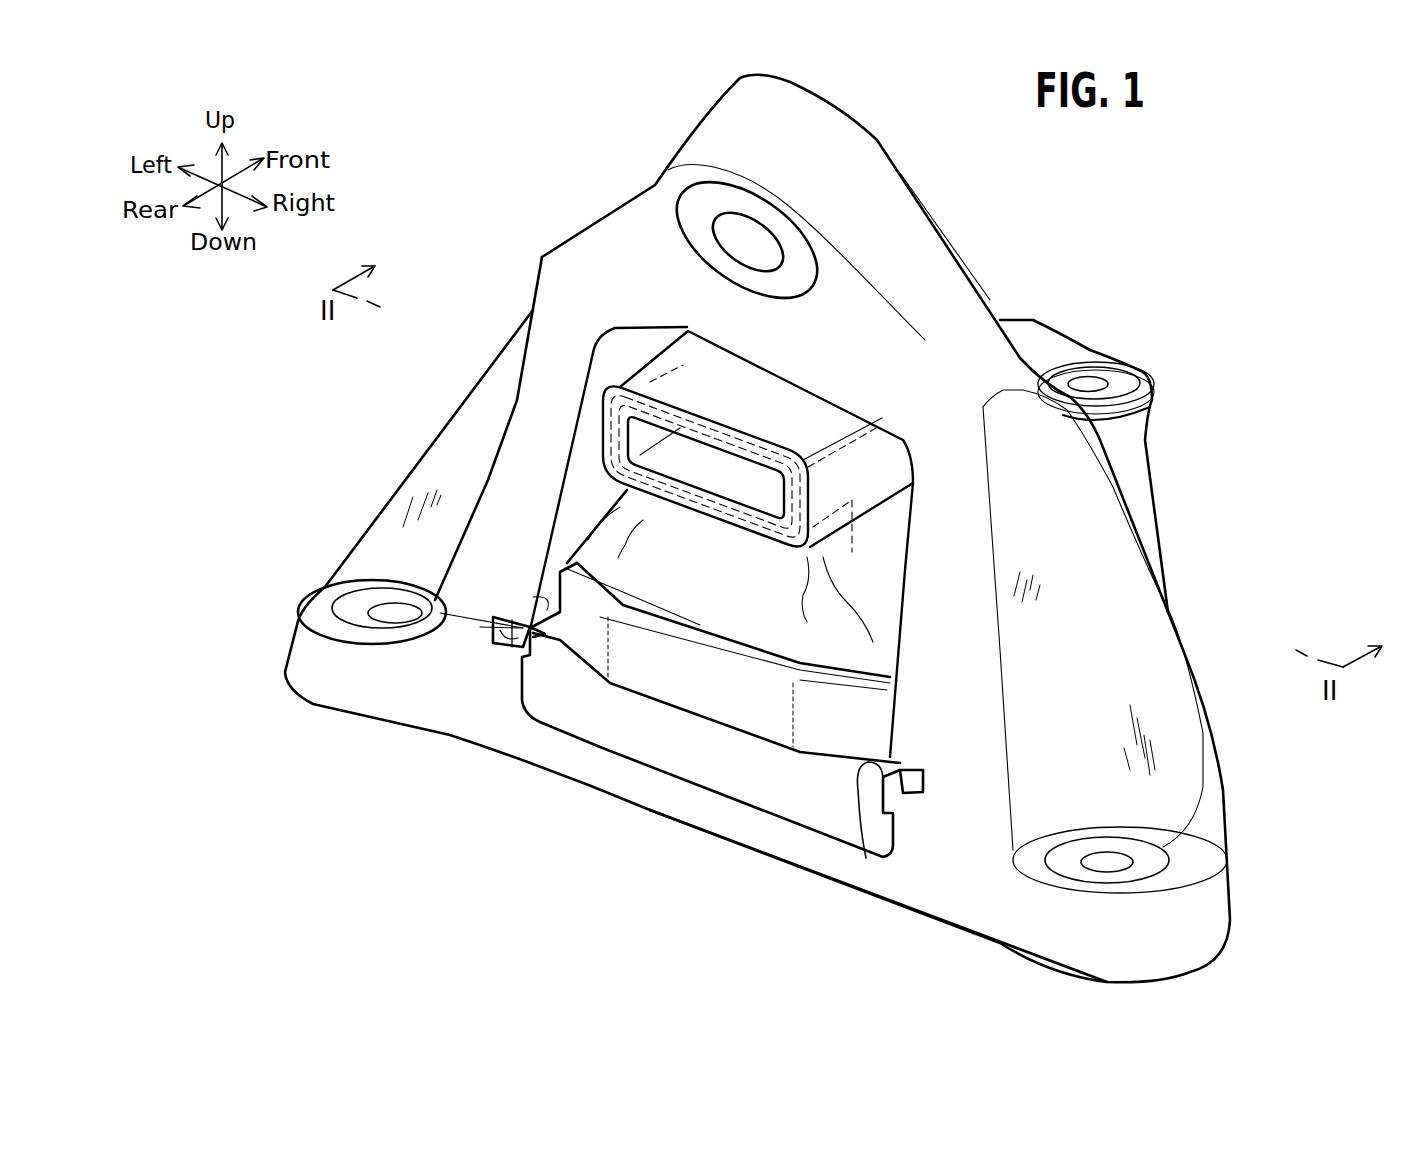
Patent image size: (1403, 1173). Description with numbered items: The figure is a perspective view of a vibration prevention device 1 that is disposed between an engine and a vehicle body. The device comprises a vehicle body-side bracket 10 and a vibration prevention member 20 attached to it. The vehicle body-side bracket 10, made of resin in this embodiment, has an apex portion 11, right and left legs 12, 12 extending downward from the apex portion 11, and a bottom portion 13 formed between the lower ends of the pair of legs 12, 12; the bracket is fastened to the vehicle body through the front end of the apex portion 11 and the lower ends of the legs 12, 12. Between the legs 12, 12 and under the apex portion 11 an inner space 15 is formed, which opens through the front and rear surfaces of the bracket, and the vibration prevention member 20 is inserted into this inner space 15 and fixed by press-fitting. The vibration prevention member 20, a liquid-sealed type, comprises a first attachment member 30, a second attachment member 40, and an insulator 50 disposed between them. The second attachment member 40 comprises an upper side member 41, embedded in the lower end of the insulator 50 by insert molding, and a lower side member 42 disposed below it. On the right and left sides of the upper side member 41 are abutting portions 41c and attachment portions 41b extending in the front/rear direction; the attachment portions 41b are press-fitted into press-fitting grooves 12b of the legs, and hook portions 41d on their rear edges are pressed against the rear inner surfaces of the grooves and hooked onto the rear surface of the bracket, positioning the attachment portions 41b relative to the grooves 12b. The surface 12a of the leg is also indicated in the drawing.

The vibration prevention device 1 is at (638, 136).
The vehicle body-side bracket 10 is at (910, 147).
The apex portion 11 is at (910, 243).
The leg 12 is at (467, 450).
The upper surface of leg portion 12a is at (547, 613).
The press-fitting groove 12b is at (503, 622).
The bottom portion 13 is at (807, 847).
The inner space 15 is at (612, 343).
The vibration prevention member 20 is at (590, 440).
The first attachment member 30 is at (655, 385).
The second attachment member 40 is at (573, 738).
The upper side member 41 is at (697, 683).
The attachment portion 41b is at (527, 637).
The abutting portion 41c is at (550, 600).
The hook portion 41d is at (493, 630).
The lower side member 42 is at (752, 785).
The insulator 50 is at (605, 547).